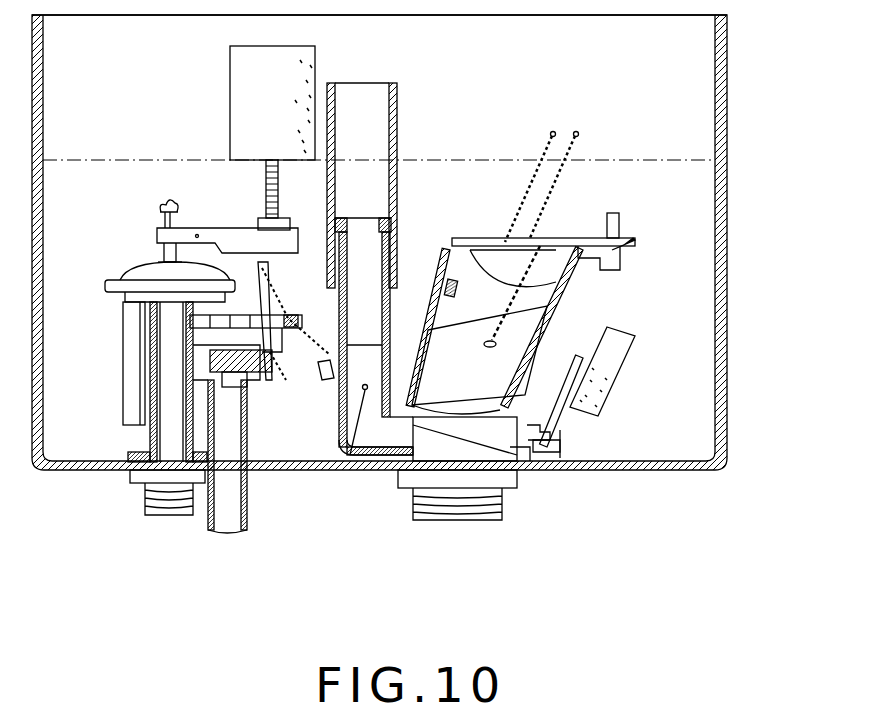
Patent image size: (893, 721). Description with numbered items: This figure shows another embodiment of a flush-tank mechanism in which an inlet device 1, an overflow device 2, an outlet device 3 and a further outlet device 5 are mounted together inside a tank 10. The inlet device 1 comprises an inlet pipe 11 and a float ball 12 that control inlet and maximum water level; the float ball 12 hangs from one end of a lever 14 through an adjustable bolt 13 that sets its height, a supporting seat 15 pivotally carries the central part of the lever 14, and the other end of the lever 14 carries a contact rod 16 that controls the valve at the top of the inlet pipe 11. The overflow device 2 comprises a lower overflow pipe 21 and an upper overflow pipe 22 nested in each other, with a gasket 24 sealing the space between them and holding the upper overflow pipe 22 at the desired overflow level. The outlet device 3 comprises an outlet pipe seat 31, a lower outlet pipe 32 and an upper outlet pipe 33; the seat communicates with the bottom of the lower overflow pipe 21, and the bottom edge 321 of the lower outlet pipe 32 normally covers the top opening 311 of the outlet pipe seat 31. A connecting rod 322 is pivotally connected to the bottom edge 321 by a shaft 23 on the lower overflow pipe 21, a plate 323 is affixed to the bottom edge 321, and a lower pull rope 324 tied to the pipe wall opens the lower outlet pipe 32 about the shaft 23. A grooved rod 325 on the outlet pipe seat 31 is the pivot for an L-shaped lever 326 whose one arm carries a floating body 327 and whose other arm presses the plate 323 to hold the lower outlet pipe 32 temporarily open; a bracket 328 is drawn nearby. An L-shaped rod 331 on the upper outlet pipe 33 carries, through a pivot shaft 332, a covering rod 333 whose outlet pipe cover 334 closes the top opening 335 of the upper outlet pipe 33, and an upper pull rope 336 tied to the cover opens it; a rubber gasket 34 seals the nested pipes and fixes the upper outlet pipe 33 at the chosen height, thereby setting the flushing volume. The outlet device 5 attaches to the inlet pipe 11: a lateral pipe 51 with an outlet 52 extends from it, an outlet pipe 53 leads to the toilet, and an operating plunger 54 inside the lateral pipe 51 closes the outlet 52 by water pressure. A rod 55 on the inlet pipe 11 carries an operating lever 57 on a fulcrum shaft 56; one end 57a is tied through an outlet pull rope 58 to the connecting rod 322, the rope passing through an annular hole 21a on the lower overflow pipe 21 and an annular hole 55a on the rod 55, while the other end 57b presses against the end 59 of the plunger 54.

The inlet device 1 is at (112, 155).
The tank 10 is at (727, 190).
The inlet pipe 11 is at (140, 435).
The float ball 12 is at (230, 98).
The adjustable bolt 13 is at (278, 188).
The lever 14 is at (291, 232).
The supporting seat 15 is at (240, 240).
The contact rod 16 is at (160, 248).
The overflow device 2 is at (412, 100).
The lower overflow pipe 21 is at (390, 320).
The annular hole 21a is at (382, 348).
The upper overflow pipe 22 is at (397, 131).
The shaft 23 is at (340, 438).
The gasket 24 is at (393, 234).
The outlet device 3 is at (527, 148).
The outlet pipe seat 31 is at (502, 508).
The top opening 311 is at (408, 420).
The lower outlet pipe 32 is at (518, 403).
The bottom edge 321 is at (363, 460).
The connecting rod 322 is at (326, 382).
The plate 323 is at (514, 470).
The lower pull rope 324 is at (565, 196).
The grooved rod 325 is at (528, 482).
The L-shaped lever 326 is at (560, 436).
The floating body 327 is at (620, 394).
The pivot bracket 328 is at (545, 472).
The upper outlet pipe 33 is at (452, 270).
The L-shaped rod 331 is at (592, 270).
The pivot shaft 332 is at (630, 248).
The covering rod 333 is at (582, 238).
The outlet pipe cover 334 is at (487, 250).
The top opening 335 is at (462, 238).
The upper pull rope 336 is at (530, 206).
The rubber gasket 34 is at (442, 286).
The outlet device 5 is at (283, 438).
The lateral pipe 51 is at (150, 404).
The outlet 52 is at (236, 430).
The outlet pipe 53 is at (247, 498).
The operating plunger 54 is at (150, 338).
The rod 55 is at (235, 322).
The annular hole 55a is at (275, 350).
The fulcrum shaft 56 is at (290, 316).
The operating lever 57 is at (272, 292).
The end of operating lever 57a is at (270, 270).
The end of operating lever 57b is at (276, 372).
The outlet pull rope 58 is at (306, 342).
The end of plunger 59 is at (250, 380).